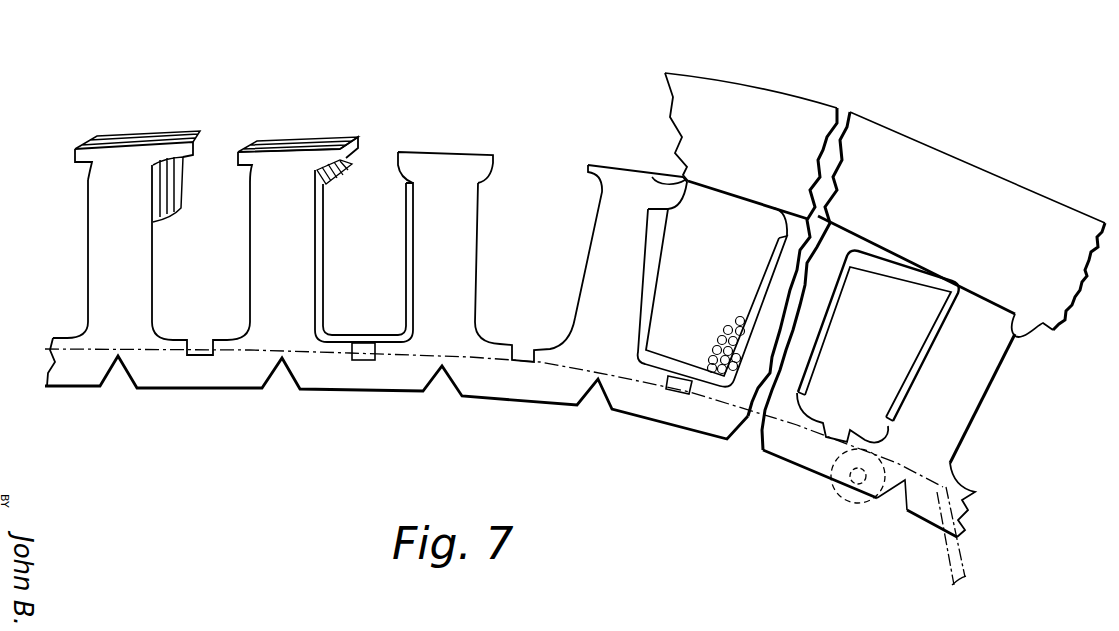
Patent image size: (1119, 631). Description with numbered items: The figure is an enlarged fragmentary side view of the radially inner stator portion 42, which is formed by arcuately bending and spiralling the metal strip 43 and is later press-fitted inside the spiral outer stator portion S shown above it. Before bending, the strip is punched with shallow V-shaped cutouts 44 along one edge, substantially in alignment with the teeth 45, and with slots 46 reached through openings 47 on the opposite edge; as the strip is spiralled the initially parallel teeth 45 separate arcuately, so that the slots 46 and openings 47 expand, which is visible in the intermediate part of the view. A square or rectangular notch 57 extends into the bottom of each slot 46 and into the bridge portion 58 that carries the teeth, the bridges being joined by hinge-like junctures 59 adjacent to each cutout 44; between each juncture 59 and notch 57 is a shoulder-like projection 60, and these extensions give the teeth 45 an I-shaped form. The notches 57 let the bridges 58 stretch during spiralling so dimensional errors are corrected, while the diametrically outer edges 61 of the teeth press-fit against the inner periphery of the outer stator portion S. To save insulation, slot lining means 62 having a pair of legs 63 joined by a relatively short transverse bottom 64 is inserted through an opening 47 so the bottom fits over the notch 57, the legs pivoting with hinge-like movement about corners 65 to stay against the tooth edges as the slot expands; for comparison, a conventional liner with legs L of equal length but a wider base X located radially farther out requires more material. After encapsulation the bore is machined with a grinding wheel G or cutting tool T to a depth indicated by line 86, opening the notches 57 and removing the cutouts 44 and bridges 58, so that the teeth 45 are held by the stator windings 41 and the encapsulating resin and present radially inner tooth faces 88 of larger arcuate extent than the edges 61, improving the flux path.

The stator windings 41 is at (737, 323).
The radially inner stator portion 42 is at (472, 353).
The metal strip 43 is at (70, 363).
The V-shaped cutouts 44 is at (107, 380).
The teeth 45 is at (140, 158).
The slots 46 is at (205, 242).
The openings 47 is at (213, 153).
The notch 57 is at (202, 345).
The bridge portion 58 is at (240, 380).
The hinge-like junctures 59 is at (140, 343).
The shoulder-like projection 60 is at (227, 345).
The diametrically outer edges 61 is at (72, 152).
The slot lining means 62 is at (338, 187).
The legs 63 is at (408, 243).
The transverse bottom 64 is at (348, 340).
The corners 65 is at (317, 327).
The line 86 is at (952, 467).
The radially inner tooth faces 88 is at (573, 372).
The outer stator portion S is at (793, 105).
The base X is at (915, 265).
The legs L is at (900, 413).
The grinding wheel G is at (872, 503).
The cutting tool T is at (965, 573).